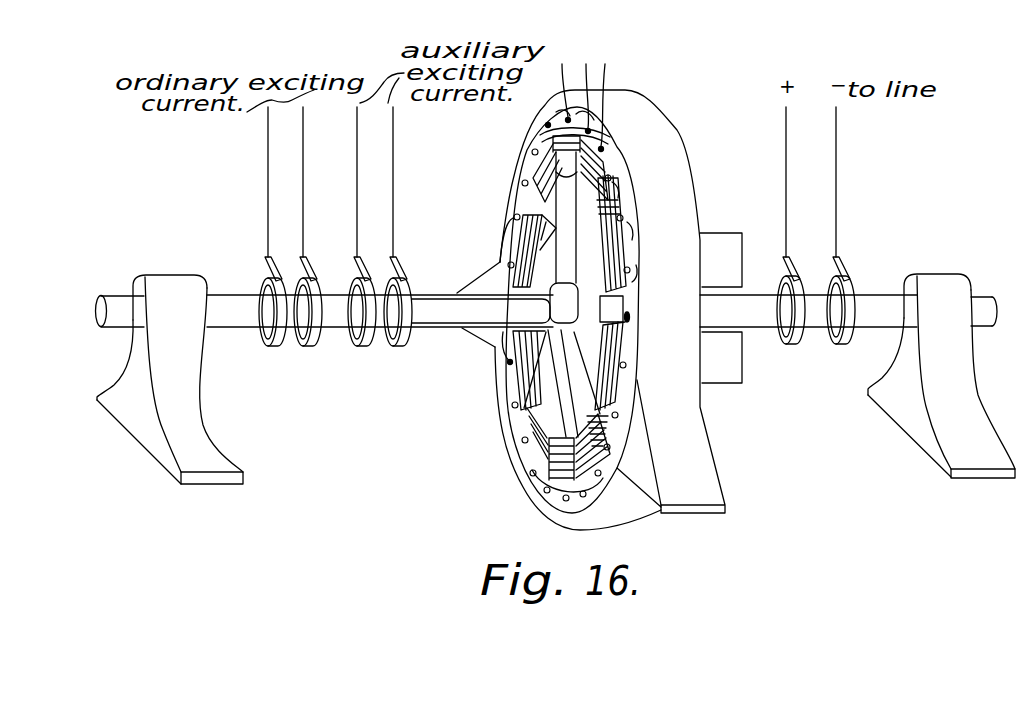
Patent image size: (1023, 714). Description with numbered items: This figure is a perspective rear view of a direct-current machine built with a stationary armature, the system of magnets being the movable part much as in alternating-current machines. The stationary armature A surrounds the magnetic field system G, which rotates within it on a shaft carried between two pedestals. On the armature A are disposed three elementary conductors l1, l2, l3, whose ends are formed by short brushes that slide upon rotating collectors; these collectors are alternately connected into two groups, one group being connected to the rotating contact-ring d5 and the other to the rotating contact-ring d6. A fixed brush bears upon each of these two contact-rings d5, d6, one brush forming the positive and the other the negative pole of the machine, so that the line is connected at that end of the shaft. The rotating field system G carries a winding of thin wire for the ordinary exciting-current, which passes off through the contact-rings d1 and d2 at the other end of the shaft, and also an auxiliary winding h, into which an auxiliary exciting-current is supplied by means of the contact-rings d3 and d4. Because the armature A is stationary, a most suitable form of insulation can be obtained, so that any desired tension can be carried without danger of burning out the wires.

The contact-ring d1 is at (273, 343).
The contact-ring d2 is at (318, 343).
The contact-ring d3 is at (371, 343).
The contact-ring d4 is at (409, 343).
The rotating contact-ring d5 is at (797, 338).
The rotating contact-ring d6 is at (847, 338).
The stationary armature A is at (610, 310).
The magnetic field system G is at (562, 294).
The auxiliary winding h is at (573, 276).
The elementary conductor l1 is at (628, 270).
The elementary conductor l2 is at (642, 219).
The elementary conductor l3 is at (636, 170).